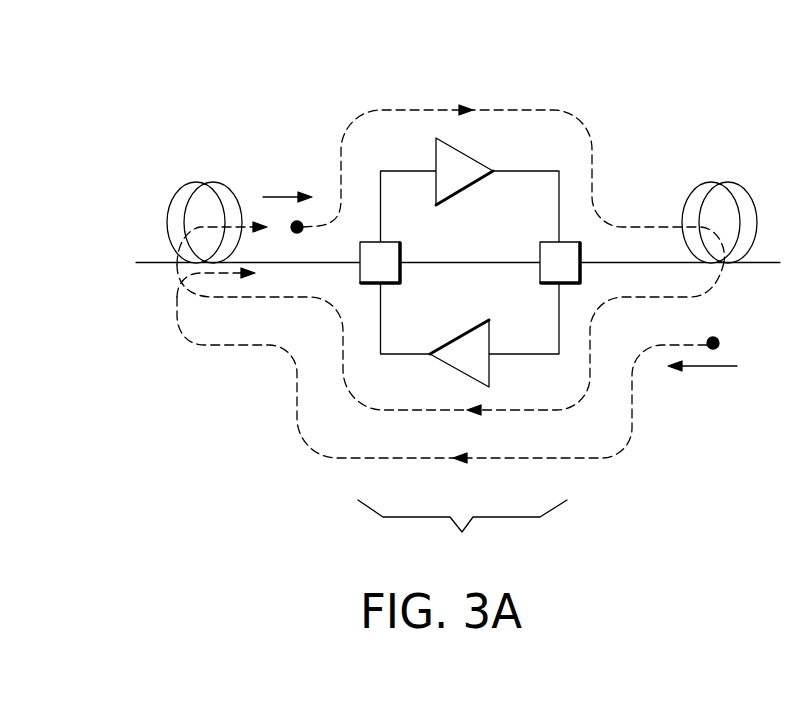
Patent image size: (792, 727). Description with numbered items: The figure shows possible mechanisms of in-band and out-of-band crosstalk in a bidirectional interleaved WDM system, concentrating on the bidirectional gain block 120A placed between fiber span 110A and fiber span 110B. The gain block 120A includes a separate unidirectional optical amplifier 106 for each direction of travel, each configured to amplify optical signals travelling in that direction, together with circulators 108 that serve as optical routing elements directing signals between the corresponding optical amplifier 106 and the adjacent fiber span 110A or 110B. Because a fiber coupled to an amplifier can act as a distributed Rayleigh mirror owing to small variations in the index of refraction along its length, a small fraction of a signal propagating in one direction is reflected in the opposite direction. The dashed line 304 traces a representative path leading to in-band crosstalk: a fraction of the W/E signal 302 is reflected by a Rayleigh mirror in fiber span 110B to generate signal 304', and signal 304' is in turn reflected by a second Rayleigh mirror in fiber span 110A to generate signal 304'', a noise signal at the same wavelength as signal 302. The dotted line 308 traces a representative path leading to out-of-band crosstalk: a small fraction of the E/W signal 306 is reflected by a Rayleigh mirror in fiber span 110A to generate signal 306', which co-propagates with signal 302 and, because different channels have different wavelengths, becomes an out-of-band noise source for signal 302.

The fiber span 110A is at (203, 183).
The fiber span 110B is at (720, 182).
The unidirectional optical amplifier 106 is at (458, 150).
The circulator 108 is at (388, 242).
The bidirectional gain block 120A is at (462, 534).
The W/E signal 302 is at (281, 197).
The dashed line / optical path 304 is at (513, 153).
The reflected signal 304' is at (450, 338).
The in-band crosstalk noise signal 304'' is at (222, 201).
The E/W signal 306 is at (707, 374).
The out-of-band noise signal 306' is at (216, 301).
The dotted line / optical path 308 is at (297, 402).